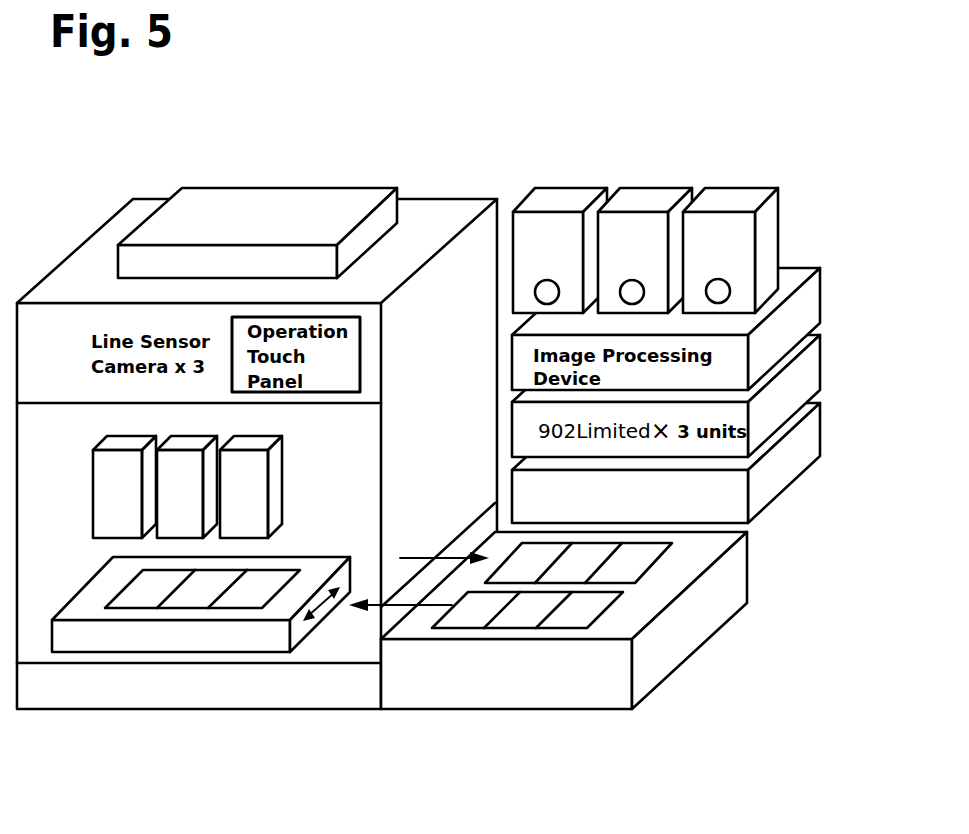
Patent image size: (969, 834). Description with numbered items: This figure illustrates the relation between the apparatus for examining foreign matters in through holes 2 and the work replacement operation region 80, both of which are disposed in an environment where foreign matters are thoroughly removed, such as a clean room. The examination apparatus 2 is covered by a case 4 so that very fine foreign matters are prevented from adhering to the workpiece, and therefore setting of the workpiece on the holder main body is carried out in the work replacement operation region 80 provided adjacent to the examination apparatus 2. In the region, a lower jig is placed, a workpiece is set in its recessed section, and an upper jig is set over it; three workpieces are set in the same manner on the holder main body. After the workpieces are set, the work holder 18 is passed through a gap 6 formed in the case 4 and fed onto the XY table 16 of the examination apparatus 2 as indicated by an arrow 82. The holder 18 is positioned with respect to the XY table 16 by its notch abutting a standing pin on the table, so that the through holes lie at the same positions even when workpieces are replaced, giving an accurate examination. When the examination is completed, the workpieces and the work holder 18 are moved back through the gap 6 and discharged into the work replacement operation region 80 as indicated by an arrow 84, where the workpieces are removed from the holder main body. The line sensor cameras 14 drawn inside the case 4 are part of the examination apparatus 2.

The apparatus for examining foreign matters in through holes 2 is at (57, 562).
The case 4 is at (44, 284).
The gap 6 is at (476, 534).
The line sensor cameras 14 is at (108, 470).
The XY table 16 is at (186, 638).
The work holder 18 is at (615, 606).
The work replacement operation region 80 is at (504, 690).
The arrow 82 is at (398, 606).
The arrow 84 is at (447, 558).